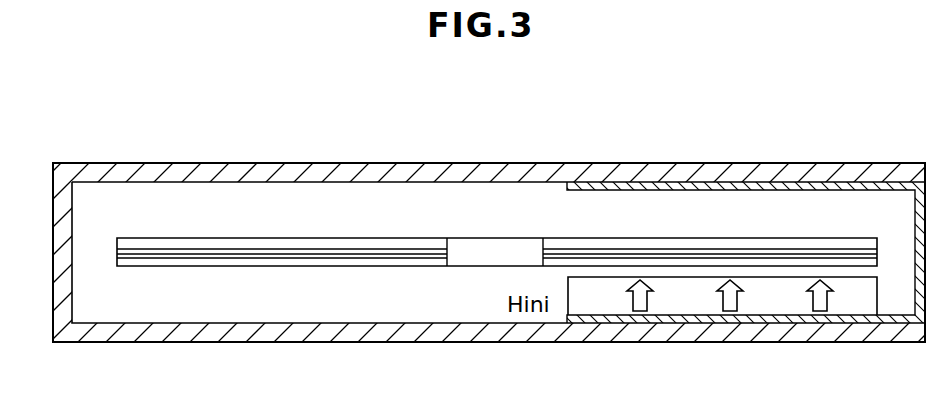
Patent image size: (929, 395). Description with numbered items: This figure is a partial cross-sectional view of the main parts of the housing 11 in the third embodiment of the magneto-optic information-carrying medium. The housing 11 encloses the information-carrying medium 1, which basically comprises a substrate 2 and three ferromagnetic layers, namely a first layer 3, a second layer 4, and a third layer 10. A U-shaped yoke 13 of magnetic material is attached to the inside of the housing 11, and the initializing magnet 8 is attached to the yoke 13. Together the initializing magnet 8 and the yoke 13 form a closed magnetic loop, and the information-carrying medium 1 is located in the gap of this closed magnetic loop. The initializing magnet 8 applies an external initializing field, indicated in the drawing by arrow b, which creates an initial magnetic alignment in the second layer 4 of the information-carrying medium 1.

The information-carrying medium 1 is at (479, 249).
The substrate 2 is at (117, 240).
The first layer 3 is at (117, 251).
The second layer 4 is at (117, 256).
The third layer 10 is at (117, 264).
The initializing magnet 8 is at (568, 280).
The housing 11 is at (530, 163).
The U-shaped yoke 13 is at (581, 191).